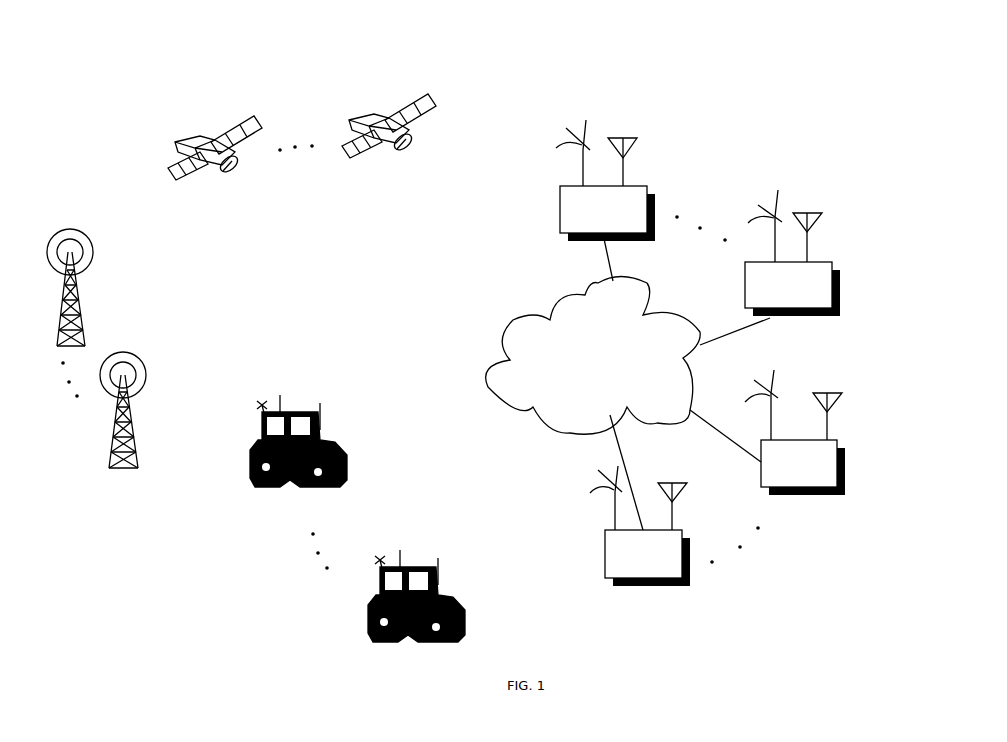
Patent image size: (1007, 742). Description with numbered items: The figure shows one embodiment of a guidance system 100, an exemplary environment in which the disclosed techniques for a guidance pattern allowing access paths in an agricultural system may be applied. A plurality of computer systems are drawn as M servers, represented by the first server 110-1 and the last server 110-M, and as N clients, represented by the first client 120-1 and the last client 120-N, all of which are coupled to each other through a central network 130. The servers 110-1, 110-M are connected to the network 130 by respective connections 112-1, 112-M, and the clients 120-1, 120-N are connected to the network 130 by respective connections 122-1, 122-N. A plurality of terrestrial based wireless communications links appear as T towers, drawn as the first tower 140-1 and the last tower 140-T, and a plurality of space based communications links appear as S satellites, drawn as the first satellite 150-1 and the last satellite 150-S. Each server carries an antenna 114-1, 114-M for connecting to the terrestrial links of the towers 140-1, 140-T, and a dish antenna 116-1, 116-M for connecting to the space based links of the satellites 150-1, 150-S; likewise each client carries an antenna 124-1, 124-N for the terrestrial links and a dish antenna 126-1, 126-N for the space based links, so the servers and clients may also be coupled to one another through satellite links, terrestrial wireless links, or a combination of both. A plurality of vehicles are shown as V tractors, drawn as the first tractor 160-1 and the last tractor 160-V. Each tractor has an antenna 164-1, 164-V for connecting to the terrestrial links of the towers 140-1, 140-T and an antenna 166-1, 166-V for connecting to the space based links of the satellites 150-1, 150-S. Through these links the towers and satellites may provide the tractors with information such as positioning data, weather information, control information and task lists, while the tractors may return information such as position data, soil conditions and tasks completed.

The guidance system 100 is at (776, 90).
The server 110-1 is at (640, 183).
The server 110-M is at (830, 262).
The connection 112-1 is at (600, 258).
The connection 112-M is at (772, 322).
The antenna 114-1 is at (640, 137).
The antenna 114-M is at (822, 215).
The dish antenna 116-1 is at (578, 152).
The dish antenna 116-M is at (782, 197).
The client 120-1 is at (605, 553).
The client 120-N is at (800, 498).
The connection 122-1 is at (620, 468).
The connection 122-N is at (720, 434).
The antenna 124-1 is at (676, 503).
The antenna 124-N is at (840, 412).
The dish antenna 126-1 is at (610, 497).
The dish antenna 126-N is at (800, 378).
The network 130 is at (535, 420).
The tower 140-1 is at (80, 306).
The tower 140-T is at (132, 430).
The satellite 150-1 is at (372, 160).
The satellite 150-S is at (200, 172).
The tractor 160-1 is at (250, 484).
The tractor 160-V is at (370, 640).
The antenna 164-1 is at (284, 402).
The antenna 164-V is at (403, 560).
The antenna 166-1 is at (256, 402).
The antenna 166-V is at (376, 558).